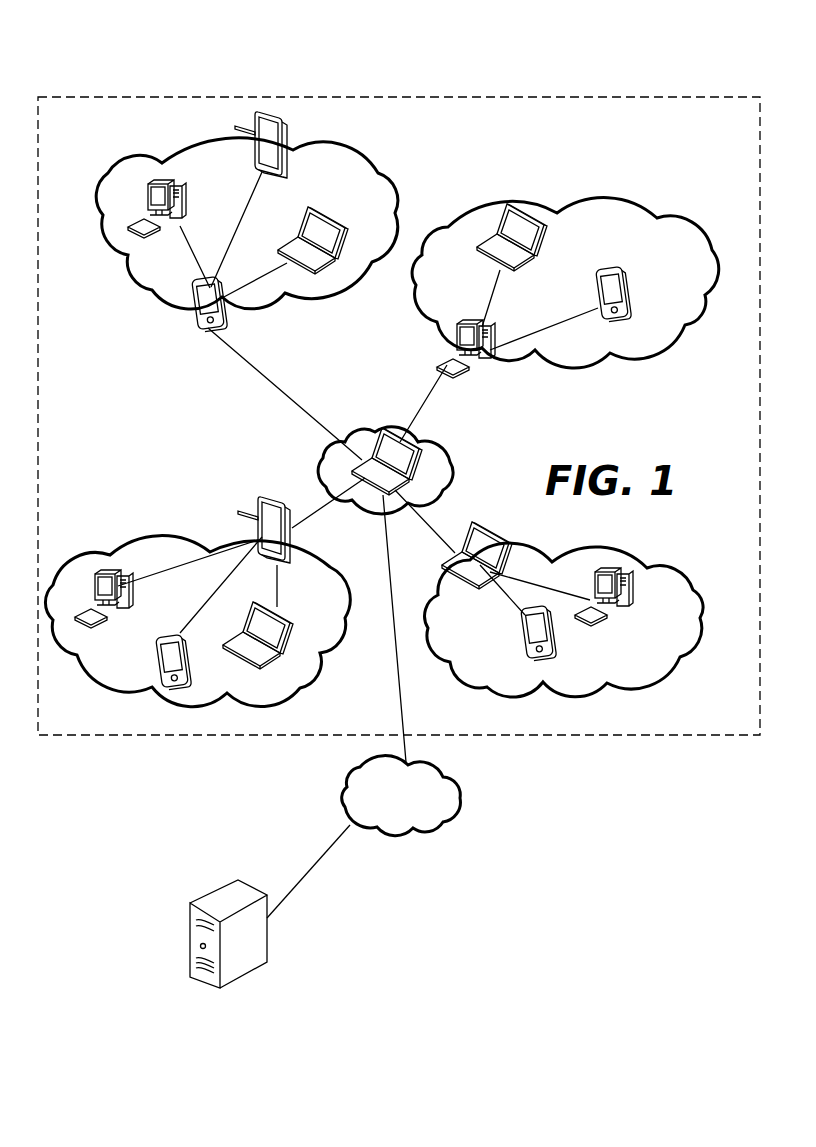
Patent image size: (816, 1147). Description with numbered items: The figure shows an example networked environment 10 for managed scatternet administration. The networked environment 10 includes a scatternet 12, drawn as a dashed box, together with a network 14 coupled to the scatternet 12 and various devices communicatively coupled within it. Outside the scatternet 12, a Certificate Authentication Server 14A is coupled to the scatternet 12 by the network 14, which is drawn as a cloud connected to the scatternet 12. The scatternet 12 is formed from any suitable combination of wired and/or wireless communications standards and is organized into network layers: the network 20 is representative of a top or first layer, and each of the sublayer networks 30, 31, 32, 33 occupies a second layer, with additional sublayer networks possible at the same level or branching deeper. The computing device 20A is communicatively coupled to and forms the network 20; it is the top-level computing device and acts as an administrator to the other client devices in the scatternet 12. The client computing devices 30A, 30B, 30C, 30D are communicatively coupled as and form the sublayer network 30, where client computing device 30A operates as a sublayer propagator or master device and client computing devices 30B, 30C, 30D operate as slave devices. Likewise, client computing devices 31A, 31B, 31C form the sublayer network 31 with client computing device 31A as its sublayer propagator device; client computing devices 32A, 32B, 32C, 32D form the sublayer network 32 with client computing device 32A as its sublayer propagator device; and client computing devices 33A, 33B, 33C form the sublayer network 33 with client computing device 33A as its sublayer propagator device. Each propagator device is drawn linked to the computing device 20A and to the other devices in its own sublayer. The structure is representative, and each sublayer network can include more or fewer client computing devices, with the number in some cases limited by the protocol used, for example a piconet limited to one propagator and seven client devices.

The networked environment 10 is at (95, 53).
The scatternet 12 is at (655, 97).
The network 14 is at (393, 819).
The Certificate Authentication Server 14A is at (228, 888).
The network 20 is at (318, 459).
The computing device 20A is at (382, 431).
The sublayer network 30 is at (350, 295).
The client computing device 30A is at (224, 311).
The client computing device 30B is at (178, 205).
The client computing device 30C is at (287, 172).
The client computing device 30D is at (345, 231).
The sublayer network 31 is at (662, 348).
The client computing device 31A is at (476, 366).
The client computing device 31B is at (478, 248).
The client computing device 31C is at (628, 312).
The sublayer network 32 is at (298, 687).
The client computing device 32A is at (296, 533).
The client computing device 32B is at (122, 608).
The client computing device 32C is at (188, 655).
The client computing device 32D is at (292, 625).
The sublayer network 33 is at (677, 567).
The client computing device 33A is at (440, 565).
The client computing device 33B is at (626, 605).
The client computing device 33C is at (553, 625).